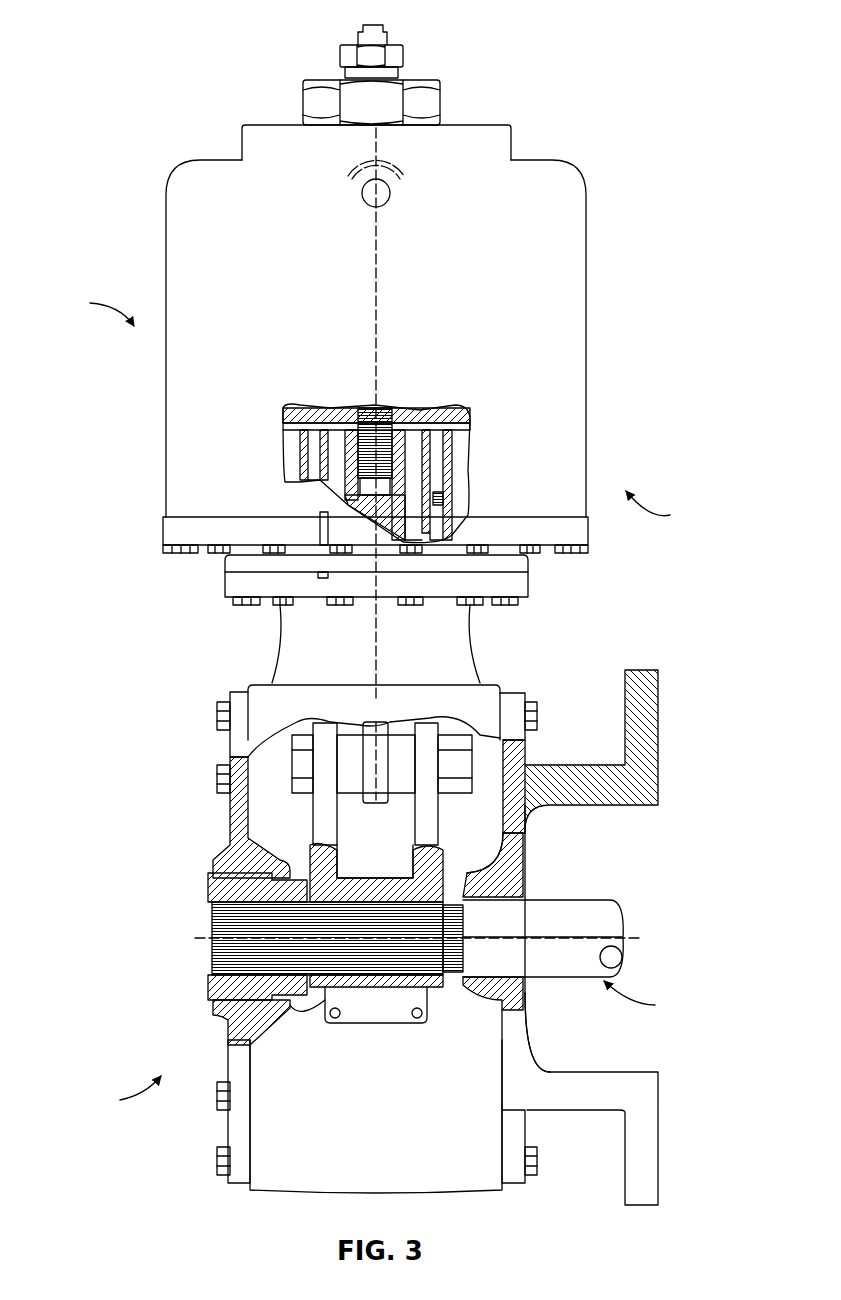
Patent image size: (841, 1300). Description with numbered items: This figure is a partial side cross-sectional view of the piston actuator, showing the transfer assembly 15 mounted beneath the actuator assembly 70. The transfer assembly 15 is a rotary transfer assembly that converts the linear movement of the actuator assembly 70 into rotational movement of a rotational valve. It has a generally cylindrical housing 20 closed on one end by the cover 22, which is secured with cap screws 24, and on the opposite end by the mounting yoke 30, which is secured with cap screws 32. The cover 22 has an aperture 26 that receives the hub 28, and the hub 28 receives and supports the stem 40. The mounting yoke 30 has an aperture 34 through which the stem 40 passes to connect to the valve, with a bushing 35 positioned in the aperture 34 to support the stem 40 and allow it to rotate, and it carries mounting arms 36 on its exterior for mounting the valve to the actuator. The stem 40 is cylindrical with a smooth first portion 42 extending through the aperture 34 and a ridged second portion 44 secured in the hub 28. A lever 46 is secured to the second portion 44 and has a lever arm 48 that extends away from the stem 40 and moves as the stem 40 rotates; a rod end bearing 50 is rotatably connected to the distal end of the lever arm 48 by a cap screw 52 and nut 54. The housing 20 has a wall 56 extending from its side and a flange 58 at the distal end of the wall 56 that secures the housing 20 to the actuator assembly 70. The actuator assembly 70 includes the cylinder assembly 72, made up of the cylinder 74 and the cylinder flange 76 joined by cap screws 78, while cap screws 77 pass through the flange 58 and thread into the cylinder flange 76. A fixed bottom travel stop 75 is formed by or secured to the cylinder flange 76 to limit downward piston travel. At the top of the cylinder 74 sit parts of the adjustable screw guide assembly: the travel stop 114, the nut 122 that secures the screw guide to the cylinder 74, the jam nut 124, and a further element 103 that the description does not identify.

The transfer assembly 15 is at (125, 1097).
The housing 20 is at (482, 1168).
The cover 22 is at (230, 692).
The cap screws 24 is at (217, 780).
The aperture 26 is at (208, 873).
The hub 28 is at (208, 990).
The mounting yoke 30 is at (527, 832).
The cap screws 32 is at (537, 716).
The aperture 34 is at (547, 877).
The bushing 35 is at (525, 993).
The mounting arms 36 is at (650, 690).
The stem 40 is at (648, 1001).
The first portion 42 is at (607, 925).
The second portion 44 is at (208, 915).
The lever 46 is at (397, 878).
The lever arm 48 is at (322, 812).
The rod end bearing 50 is at (398, 800).
The cap screw 52 is at (292, 776).
The nut 54 is at (470, 783).
The wall 56 is at (278, 643).
The flange 58 is at (515, 583).
The actuator assembly 70 is at (97, 309).
The cylinder assembly 72 is at (665, 510).
The cylinder 74 is at (583, 303).
The fixed bottom travel stop 75 is at (298, 462).
The cylinder flange 76 is at (168, 533).
The cap screws 77 is at (520, 603).
The cap screws 78 is at (212, 555).
The washer 103 is at (385, 75).
The travel stop 114 is at (358, 38).
The nut 122 is at (428, 105).
The jam nut 124 is at (400, 52).